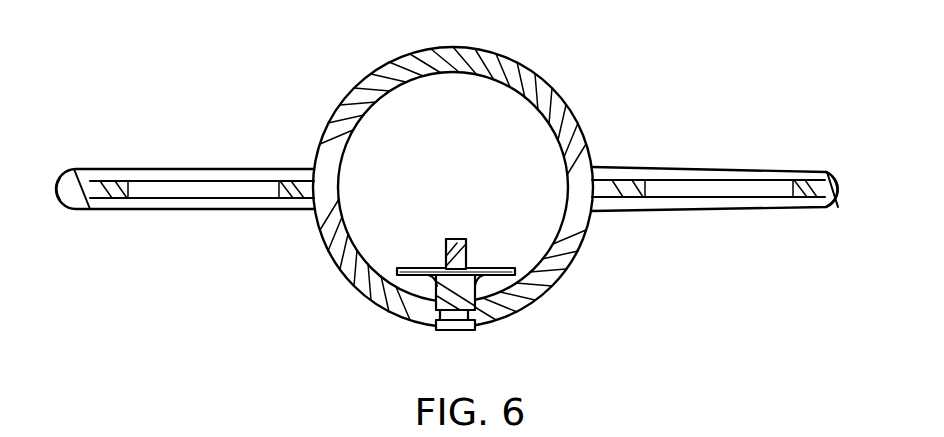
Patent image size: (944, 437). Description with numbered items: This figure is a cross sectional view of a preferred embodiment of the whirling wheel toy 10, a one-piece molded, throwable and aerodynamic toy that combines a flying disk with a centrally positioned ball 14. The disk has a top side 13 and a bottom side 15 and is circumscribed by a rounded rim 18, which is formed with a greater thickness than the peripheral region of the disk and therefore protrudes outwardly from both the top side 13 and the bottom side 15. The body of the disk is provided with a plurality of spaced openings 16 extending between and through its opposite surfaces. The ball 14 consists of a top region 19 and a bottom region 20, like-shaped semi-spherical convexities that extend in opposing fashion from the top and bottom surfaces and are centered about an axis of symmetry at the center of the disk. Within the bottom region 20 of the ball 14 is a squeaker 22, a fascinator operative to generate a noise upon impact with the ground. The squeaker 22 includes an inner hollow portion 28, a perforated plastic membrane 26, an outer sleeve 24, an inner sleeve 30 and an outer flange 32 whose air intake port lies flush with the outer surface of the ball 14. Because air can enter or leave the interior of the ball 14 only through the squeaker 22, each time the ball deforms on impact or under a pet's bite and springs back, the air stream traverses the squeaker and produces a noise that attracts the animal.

The whirling wheel toy 10 is at (722, 71).
The top side 13 is at (110, 168).
The ball 14 is at (549, 153).
The bottom side 15 is at (703, 209).
The spaced openings 16 is at (172, 174).
The rounded rim 18 is at (843, 175).
The top region 19 is at (522, 76).
The bottom region 20 is at (347, 262).
The squeaker 22 is at (438, 227).
The outer sleeve 24 is at (507, 318).
The perforated plastic membrane 26 is at (397, 302).
The inner hollow portion 28 is at (460, 247).
The inner sleeve 30 is at (449, 318).
The outer flange 32 is at (463, 331).